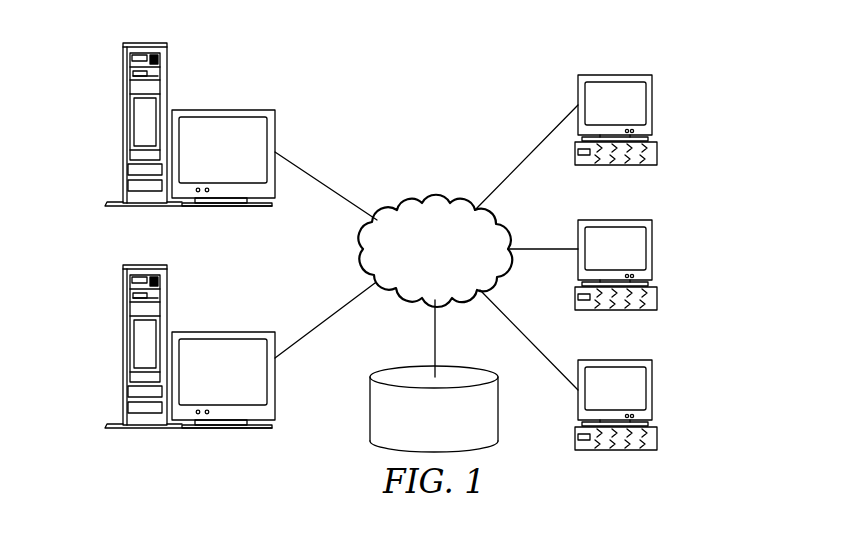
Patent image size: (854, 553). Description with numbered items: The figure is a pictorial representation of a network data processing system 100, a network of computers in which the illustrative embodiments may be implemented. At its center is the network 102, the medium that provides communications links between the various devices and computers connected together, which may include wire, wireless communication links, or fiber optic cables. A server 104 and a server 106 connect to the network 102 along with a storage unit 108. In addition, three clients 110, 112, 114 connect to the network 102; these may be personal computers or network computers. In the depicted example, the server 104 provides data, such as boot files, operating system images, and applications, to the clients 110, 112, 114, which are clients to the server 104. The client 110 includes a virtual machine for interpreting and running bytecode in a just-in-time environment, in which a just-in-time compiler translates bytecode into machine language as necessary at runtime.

The network data processing system 100 is at (487, 81).
The network 102 is at (407, 200).
The server 104 is at (123, 125).
The server 106 is at (123, 347).
The storage unit 108 is at (370, 418).
The client 110 is at (652, 103).
The client 112 is at (652, 248).
The client 114 is at (652, 392).